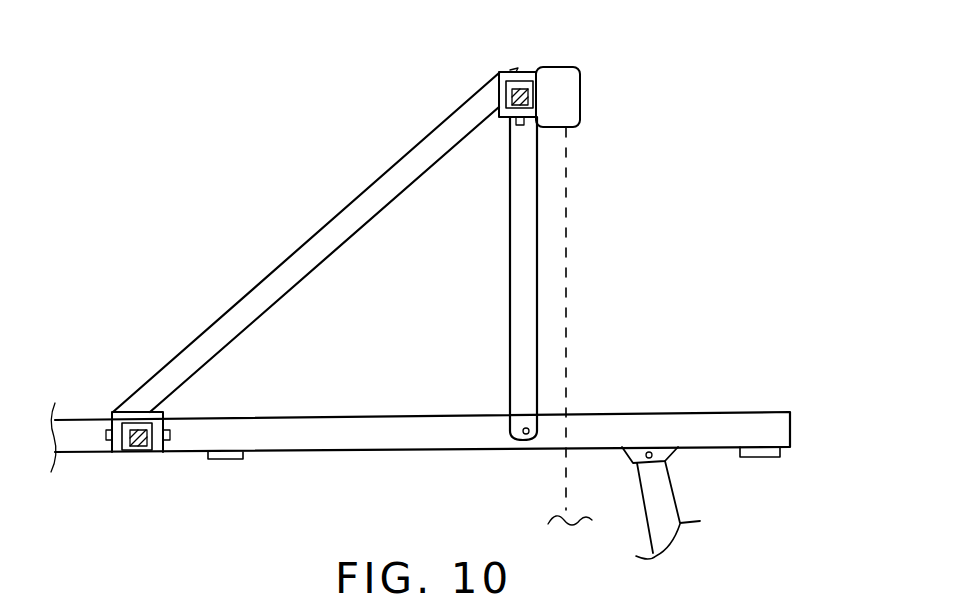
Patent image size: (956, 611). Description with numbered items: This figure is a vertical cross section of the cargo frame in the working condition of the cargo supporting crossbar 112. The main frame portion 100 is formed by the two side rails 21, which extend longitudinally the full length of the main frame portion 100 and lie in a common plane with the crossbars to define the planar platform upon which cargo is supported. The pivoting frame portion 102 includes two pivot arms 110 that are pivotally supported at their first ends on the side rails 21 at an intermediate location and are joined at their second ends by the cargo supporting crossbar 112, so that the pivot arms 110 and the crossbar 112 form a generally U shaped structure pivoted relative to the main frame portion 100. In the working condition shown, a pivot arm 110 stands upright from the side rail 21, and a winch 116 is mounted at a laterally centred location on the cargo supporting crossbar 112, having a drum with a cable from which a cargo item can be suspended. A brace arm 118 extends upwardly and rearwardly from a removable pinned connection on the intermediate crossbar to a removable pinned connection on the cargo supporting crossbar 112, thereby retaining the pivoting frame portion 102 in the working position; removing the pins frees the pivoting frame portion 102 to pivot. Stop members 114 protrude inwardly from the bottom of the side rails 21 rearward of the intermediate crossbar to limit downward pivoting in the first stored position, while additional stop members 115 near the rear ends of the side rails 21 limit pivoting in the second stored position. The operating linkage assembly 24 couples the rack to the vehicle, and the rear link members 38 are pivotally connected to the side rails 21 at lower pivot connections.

The main frame portion 100 is at (86, 452).
The side rails 21 is at (343, 438).
The operating linkage assembly 24 is at (134, 438).
The rear link members 38 is at (660, 505).
The pivoting frame portion 102 is at (543, 199).
The pivot arms 110 is at (520, 242).
The cargo supporting crossbar 112 is at (521, 93).
The stop members 114 is at (212, 462).
The additional stop members 115 is at (757, 458).
The winch 116 is at (557, 95).
The brace arm 118 is at (322, 232).